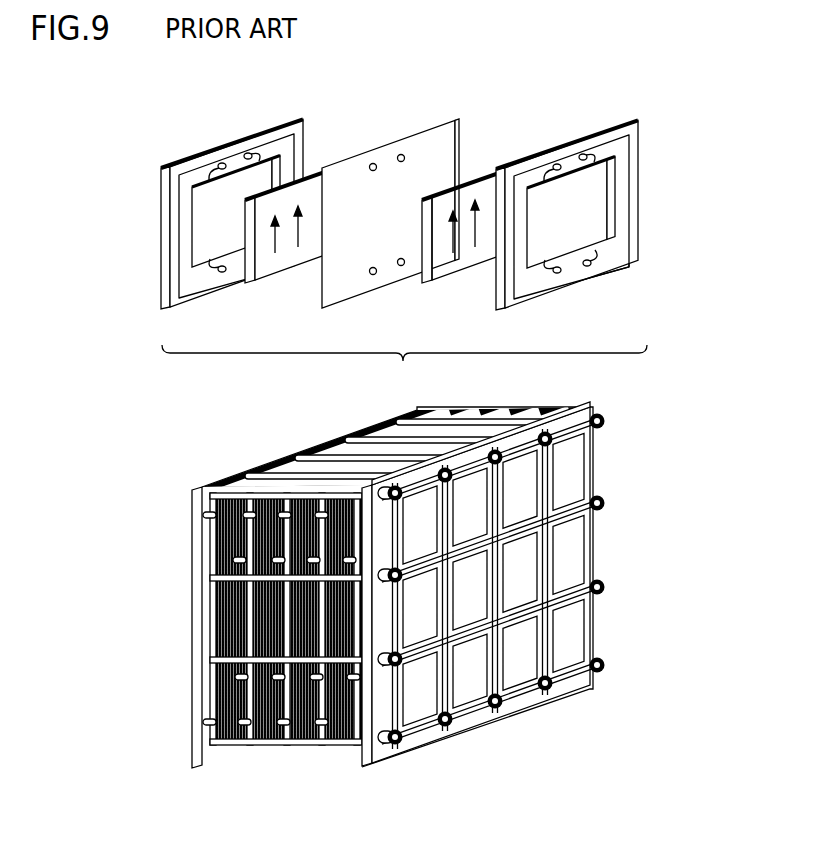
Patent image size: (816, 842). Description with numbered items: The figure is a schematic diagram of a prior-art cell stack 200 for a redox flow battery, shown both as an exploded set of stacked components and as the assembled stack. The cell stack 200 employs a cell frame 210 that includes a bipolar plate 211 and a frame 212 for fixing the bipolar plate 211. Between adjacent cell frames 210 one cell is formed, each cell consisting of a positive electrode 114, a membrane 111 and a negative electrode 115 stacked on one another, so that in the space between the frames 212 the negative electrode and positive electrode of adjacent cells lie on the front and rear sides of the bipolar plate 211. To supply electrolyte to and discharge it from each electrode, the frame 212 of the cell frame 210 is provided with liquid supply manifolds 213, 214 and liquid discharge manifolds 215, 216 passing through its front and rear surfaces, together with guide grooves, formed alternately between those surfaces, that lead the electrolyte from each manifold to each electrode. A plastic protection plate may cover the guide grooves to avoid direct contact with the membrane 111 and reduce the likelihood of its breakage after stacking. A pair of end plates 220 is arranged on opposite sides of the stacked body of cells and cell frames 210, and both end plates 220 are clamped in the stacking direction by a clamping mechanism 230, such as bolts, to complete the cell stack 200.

The cell stack 200 is at (430, 605).
The cell frame 210 is at (426, 212).
The bipolar plate 211 is at (597, 175).
The frame 212 is at (623, 210).
The liquid supply manifold 213 is at (589, 266).
The liquid supply manifold 214 is at (220, 272).
The liquid discharge manifold 215 is at (222, 163).
The liquid discharge manifold 216 is at (250, 154).
The membrane 111 is at (412, 135).
The positive electrode 114 is at (297, 265).
The negative electrode 115 is at (473, 265).
The end plate 220 is at (190, 510).
The clamping mechanism 230 is at (292, 458).